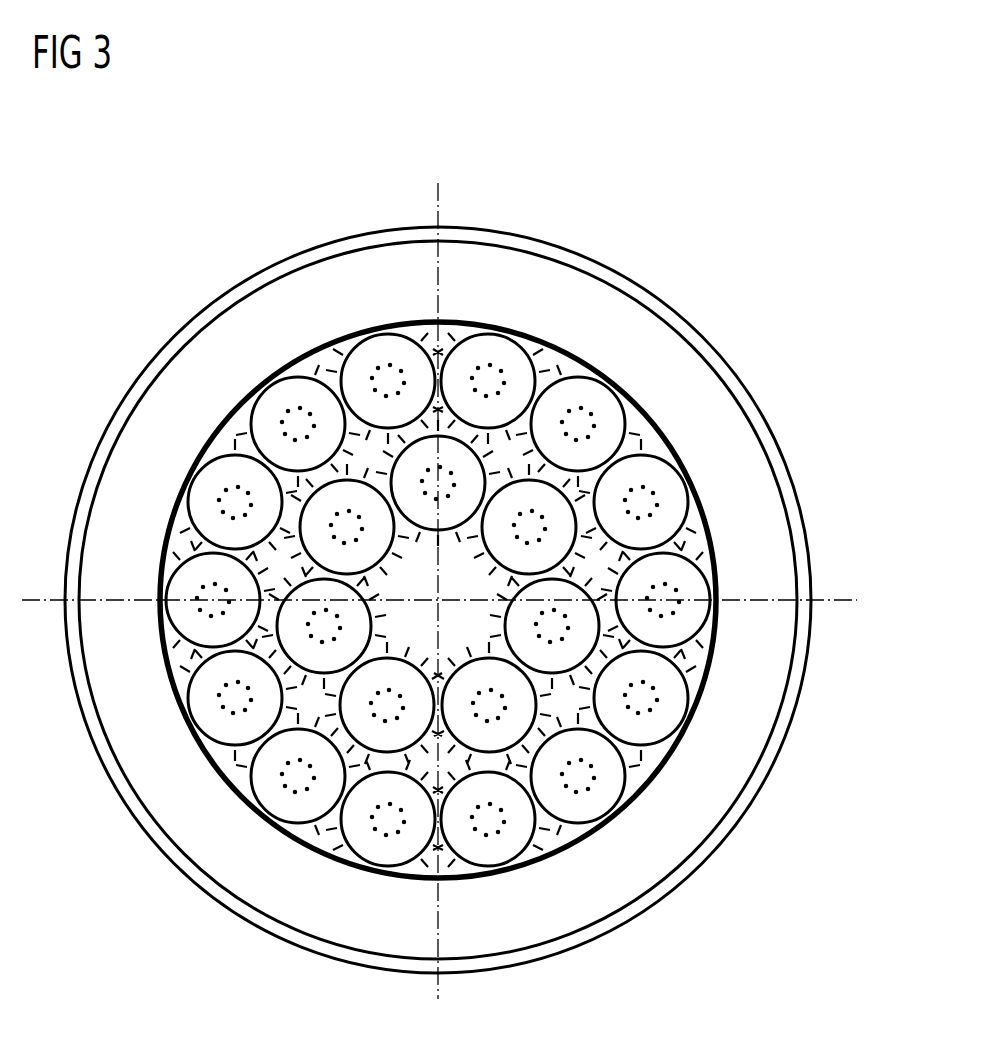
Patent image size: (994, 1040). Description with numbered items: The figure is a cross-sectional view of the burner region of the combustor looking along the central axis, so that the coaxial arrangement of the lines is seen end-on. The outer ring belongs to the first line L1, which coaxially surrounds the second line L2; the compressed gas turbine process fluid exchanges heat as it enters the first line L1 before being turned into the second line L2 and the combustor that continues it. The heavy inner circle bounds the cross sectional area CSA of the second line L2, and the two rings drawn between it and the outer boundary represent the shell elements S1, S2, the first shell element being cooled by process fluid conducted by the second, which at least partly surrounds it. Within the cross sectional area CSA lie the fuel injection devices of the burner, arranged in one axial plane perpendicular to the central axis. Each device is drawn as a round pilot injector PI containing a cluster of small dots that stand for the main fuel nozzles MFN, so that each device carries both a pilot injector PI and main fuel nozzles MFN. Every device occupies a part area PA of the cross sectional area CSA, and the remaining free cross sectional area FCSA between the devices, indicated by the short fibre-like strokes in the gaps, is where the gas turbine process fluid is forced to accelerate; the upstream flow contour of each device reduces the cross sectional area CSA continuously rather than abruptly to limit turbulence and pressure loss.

The cross sectional area CSA is at (414, 557).
The free cross sectional area FCSA is at (323, 362).
The part area PA is at (575, 408).
The pilot injector PI is at (600, 397).
The main fuel nozzle MFN is at (629, 425).
The first line L1 is at (317, 925).
The second line L2 is at (478, 765).
The inner sheath S1 is at (277, 832).
The outer sheath S2 is at (193, 867).